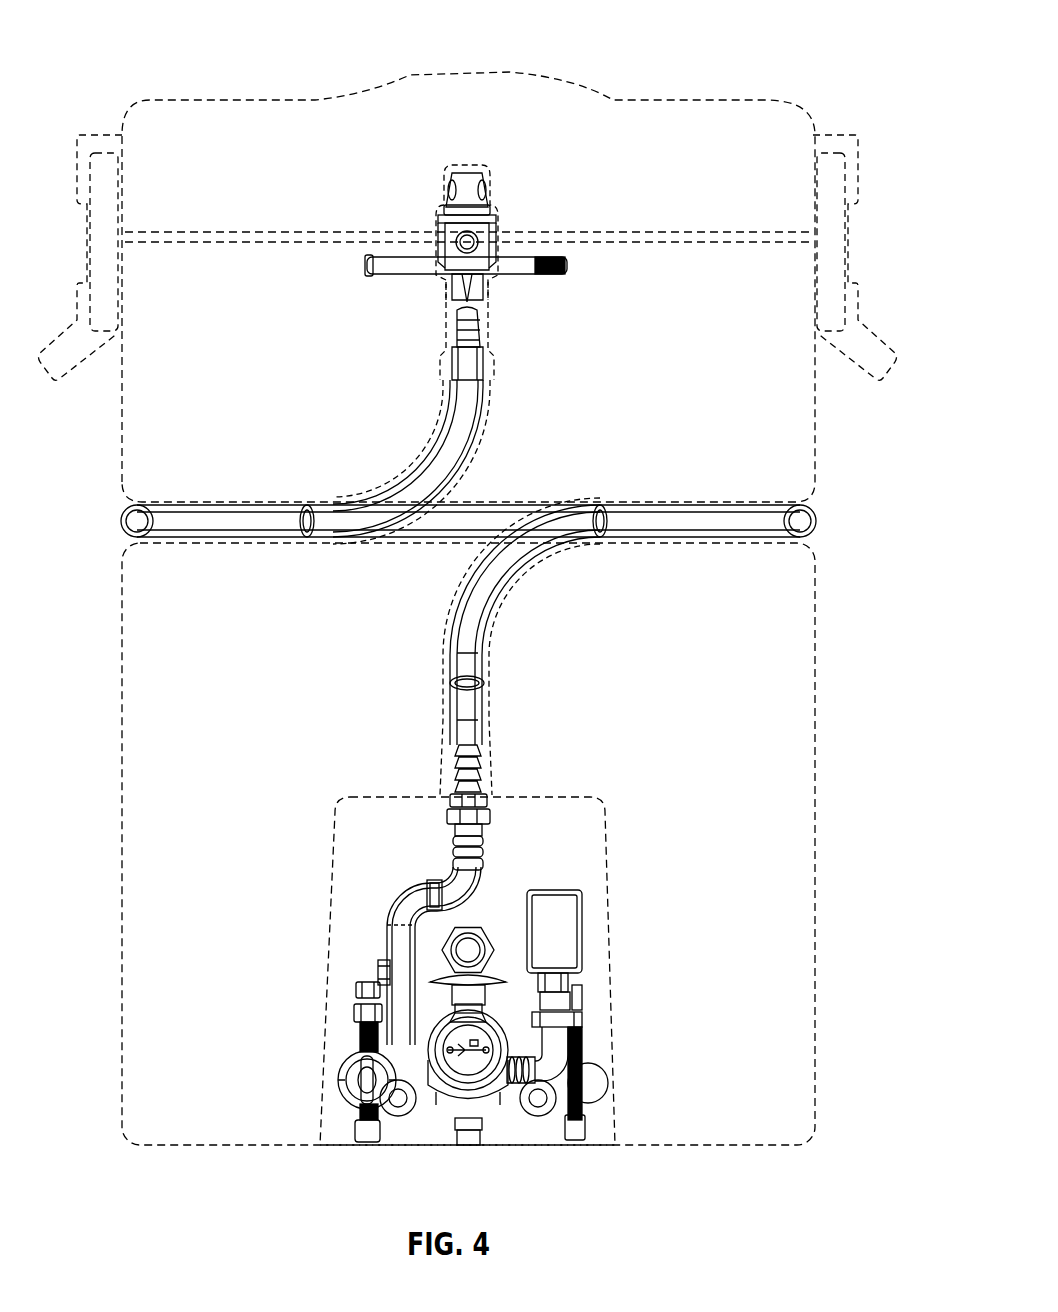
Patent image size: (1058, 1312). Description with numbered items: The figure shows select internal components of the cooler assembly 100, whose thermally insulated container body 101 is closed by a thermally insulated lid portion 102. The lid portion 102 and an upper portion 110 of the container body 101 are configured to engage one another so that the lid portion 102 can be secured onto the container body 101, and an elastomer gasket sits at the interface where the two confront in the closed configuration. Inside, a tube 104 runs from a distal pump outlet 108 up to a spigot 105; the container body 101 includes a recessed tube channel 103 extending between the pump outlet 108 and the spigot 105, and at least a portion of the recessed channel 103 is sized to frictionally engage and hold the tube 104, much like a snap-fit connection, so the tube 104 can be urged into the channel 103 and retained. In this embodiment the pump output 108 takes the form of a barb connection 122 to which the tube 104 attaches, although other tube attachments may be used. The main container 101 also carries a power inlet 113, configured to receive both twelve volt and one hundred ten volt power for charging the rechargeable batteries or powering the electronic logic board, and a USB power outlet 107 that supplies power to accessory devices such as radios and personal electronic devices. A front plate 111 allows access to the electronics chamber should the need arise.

The cooler assembly 100 is at (126, 36).
The container body 101 is at (818, 632).
The lid portion 102 is at (765, 138).
The recessed tube channel 103 is at (522, 577).
The tube 104 is at (800, 521).
The spigot 105 is at (514, 286).
The USB power outlet 107 is at (500, 1045).
The distal pump outlet 108 is at (500, 850).
The upper portion of the container body 110 is at (782, 237).
The front plate 111 is at (365, 851).
The power inlet 113 is at (367, 1080).
The barb connection 122 is at (500, 776).